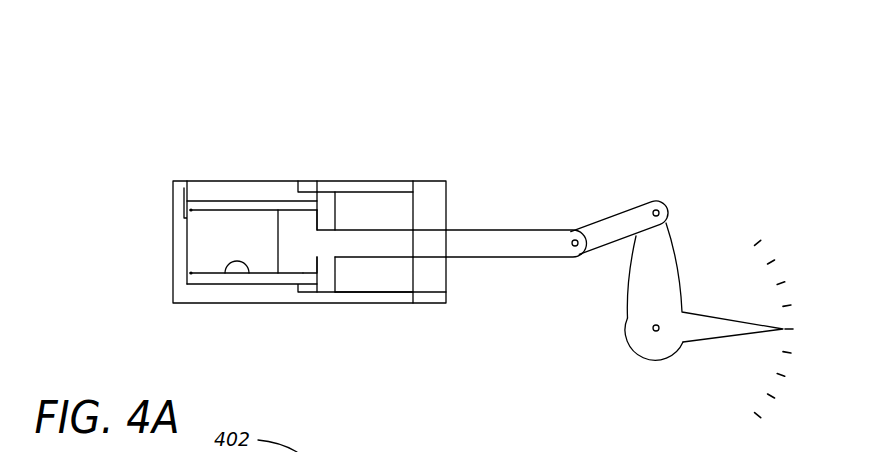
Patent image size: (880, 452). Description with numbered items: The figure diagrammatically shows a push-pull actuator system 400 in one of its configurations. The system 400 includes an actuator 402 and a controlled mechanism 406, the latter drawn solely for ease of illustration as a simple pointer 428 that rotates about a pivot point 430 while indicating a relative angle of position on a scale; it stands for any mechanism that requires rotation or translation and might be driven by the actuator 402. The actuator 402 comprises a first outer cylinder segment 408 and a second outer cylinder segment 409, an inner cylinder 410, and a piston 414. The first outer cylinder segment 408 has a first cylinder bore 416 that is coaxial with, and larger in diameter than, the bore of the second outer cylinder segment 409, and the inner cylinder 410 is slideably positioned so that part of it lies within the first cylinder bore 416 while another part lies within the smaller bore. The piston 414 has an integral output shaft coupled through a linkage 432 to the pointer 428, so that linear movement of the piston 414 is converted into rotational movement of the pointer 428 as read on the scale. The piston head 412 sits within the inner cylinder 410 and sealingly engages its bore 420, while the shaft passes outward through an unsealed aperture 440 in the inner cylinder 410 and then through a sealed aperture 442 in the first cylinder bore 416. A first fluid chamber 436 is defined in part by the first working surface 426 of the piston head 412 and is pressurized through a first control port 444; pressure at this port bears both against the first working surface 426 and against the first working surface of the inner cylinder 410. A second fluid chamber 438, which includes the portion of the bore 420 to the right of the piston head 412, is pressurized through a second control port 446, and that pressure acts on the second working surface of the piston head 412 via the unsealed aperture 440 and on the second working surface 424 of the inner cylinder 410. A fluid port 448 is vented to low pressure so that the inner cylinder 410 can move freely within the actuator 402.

The push-pull actuator system 400 is at (82, 213).
The actuator 402 is at (319, 68).
The controlled mechanism 406 is at (706, 219).
The first outer cylinder segment 408 is at (434, 192).
The second outer cylinder segment 409 is at (283, 292).
The inner cylinder 410 is at (246, 206).
The piston head 412 is at (305, 263).
The piston 414 is at (510, 242).
The first cylinder bore 416 is at (397, 292).
The bore of the inner cylinder 420 is at (222, 274).
The second working surface of the inner cylinder 424 is at (344, 201).
The first working surface of the piston 426 is at (270, 238).
The pointer 428 is at (655, 358).
The pivot point 430 is at (651, 329).
The linkage 432 is at (614, 232).
The first fluid chamber 436 is at (205, 253).
The second fluid chamber 438 is at (387, 200).
The unsealed aperture 440 is at (326, 257).
The sealed aperture 442 is at (440, 236).
The first control port 444 is at (185, 182).
The second control port 446 is at (411, 182).
The fluid port 448 is at (315, 182).